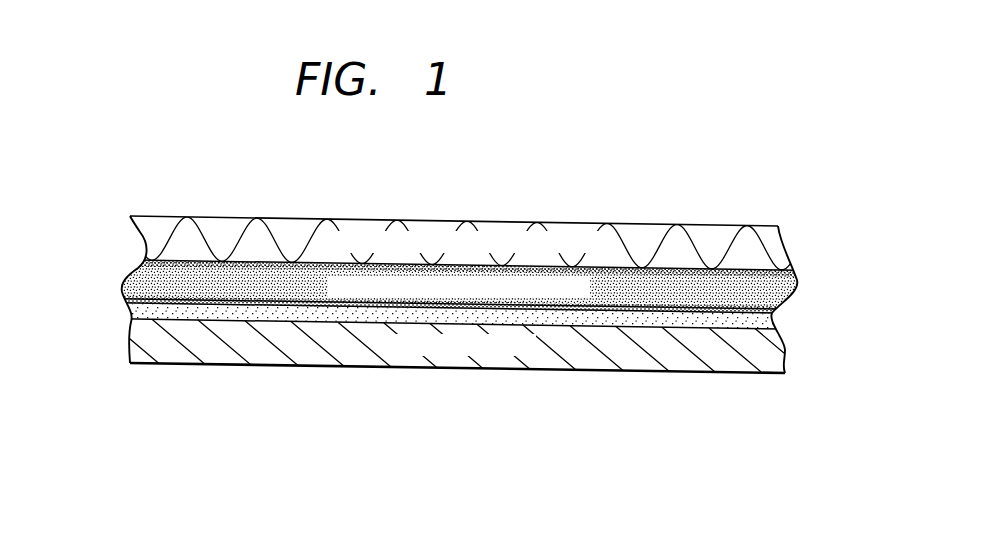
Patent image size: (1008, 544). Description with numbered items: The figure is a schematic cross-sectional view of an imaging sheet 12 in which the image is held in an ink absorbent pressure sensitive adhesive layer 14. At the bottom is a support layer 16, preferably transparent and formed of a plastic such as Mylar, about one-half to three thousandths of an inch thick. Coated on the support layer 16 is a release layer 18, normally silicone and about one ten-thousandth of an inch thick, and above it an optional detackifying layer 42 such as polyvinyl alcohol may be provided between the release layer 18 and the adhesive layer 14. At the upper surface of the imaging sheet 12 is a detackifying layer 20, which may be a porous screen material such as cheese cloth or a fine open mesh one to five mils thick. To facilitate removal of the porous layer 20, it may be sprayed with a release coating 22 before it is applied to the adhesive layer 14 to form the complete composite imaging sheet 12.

The imaging sheet 12 is at (594, 210).
The ink absorbent pressure sensitive adhesive layer 14 is at (127, 283).
The support layer 16 is at (302, 352).
The release layer 18 is at (131, 312).
The detackifying layer 20 is at (675, 247).
The release coating 22 is at (146, 255).
The detackifying layer 42 is at (694, 308).